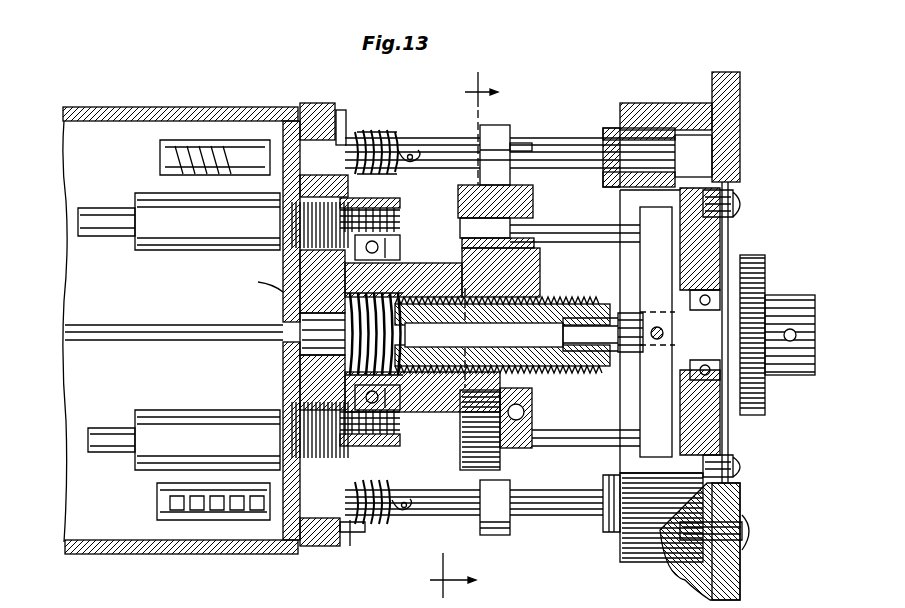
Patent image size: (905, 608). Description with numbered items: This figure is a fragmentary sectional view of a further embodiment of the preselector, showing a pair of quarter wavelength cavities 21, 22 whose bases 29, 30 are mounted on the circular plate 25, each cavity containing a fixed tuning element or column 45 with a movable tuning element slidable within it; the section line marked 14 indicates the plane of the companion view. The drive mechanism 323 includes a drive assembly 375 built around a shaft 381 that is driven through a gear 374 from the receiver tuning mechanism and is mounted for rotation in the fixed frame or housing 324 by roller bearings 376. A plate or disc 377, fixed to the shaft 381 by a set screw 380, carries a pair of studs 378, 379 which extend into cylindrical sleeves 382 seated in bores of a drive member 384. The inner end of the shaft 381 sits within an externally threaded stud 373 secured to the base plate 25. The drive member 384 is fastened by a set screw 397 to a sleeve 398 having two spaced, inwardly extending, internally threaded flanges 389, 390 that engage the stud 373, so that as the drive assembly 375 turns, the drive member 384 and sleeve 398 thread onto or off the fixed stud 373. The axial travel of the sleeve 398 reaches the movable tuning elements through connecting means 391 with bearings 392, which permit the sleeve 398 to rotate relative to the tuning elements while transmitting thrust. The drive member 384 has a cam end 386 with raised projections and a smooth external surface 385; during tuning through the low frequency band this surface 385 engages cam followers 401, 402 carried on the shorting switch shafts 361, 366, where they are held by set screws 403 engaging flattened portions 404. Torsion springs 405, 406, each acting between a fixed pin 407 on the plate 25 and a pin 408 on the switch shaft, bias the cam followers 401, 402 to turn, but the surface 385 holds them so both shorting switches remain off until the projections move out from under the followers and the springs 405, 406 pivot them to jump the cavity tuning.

The cavity 21 is at (110, 148).
The cavity 22 is at (126, 530).
The circular plate 25 is at (312, 102).
The cavity base 29 is at (283, 298).
The cavity base 30 is at (283, 375).
The fixed tuning element or column 45 is at (164, 252).
The drive mechanism 323 is at (569, 128).
The fixed frame or housing 324 is at (706, 110).
The shorting switch shaft 361 is at (468, 122).
The shorting switch shaft 366 is at (298, 555).
The externally threaded sleeve or stud 373 is at (456, 284).
The gear 374 is at (753, 412).
The drive assembly 375 is at (824, 294).
The roller bearings 376 is at (693, 372).
The plate or disc 377 is at (658, 255).
The stud 378 is at (550, 225).
The stud 379 is at (585, 438).
The set screw 380 is at (653, 329).
The shaft 381 is at (612, 354).
The cylindrical sleeves 382 is at (460, 240).
The drive member 384 is at (458, 438).
The smooth external surface 385 is at (460, 178).
The cam end 386 is at (460, 210).
The internally threaded flange 389 is at (259, 279).
The internally threaded flange 390 is at (536, 265).
The connecting means 391 is at (390, 399).
The bearings 392 is at (394, 422).
The set screw 397 is at (514, 444).
The sleeve 398 is at (536, 246).
The cam follower 401 is at (515, 144).
The cam follower 402 is at (491, 535).
The set screw 403 is at (491, 125).
The flattened portion 404 is at (517, 175).
The torsion spring 405 is at (366, 132).
The torsion spring 406 is at (378, 514).
The fixed pin 407 is at (342, 110).
The pin 408 is at (405, 150).
The section line 14- 14 is at (468, 334).